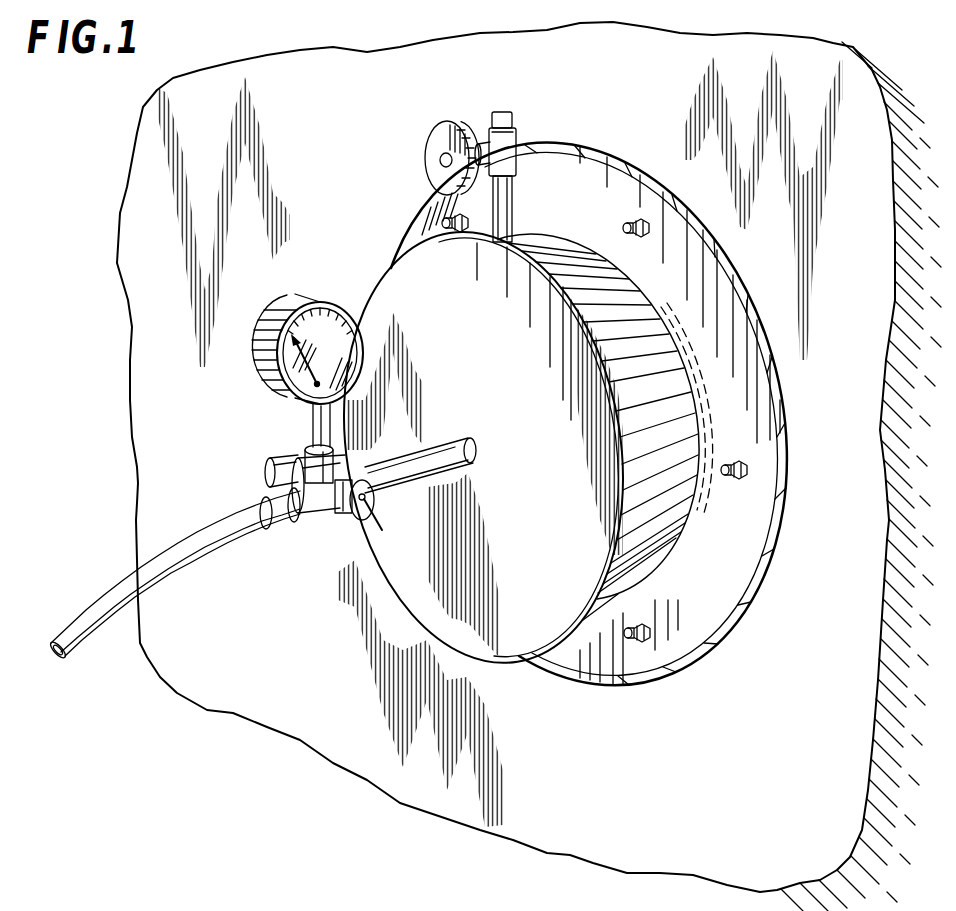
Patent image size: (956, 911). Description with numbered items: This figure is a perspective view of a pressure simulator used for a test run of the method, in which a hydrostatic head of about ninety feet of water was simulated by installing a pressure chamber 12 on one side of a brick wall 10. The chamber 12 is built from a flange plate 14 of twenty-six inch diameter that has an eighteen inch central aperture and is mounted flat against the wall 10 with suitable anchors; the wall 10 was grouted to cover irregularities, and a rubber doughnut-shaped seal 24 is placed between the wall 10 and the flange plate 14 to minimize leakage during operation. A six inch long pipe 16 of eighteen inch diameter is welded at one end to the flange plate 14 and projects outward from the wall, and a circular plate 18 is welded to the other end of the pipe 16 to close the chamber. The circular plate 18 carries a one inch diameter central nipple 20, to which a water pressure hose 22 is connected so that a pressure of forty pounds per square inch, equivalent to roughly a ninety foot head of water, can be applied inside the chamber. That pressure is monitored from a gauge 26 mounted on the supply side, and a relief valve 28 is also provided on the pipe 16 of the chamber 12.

The brick wall 10 is at (631, 807).
The pressure chamber 12 is at (528, 679).
The flange plate 14 is at (647, 667).
The pipe 16 is at (650, 560).
The circular plate 18 is at (441, 624).
The nipple 20 is at (433, 477).
The water pressure hose 22 is at (223, 530).
The seal ring 24 is at (697, 377).
The gauge 26 is at (280, 400).
The relief valve 28 is at (510, 186).